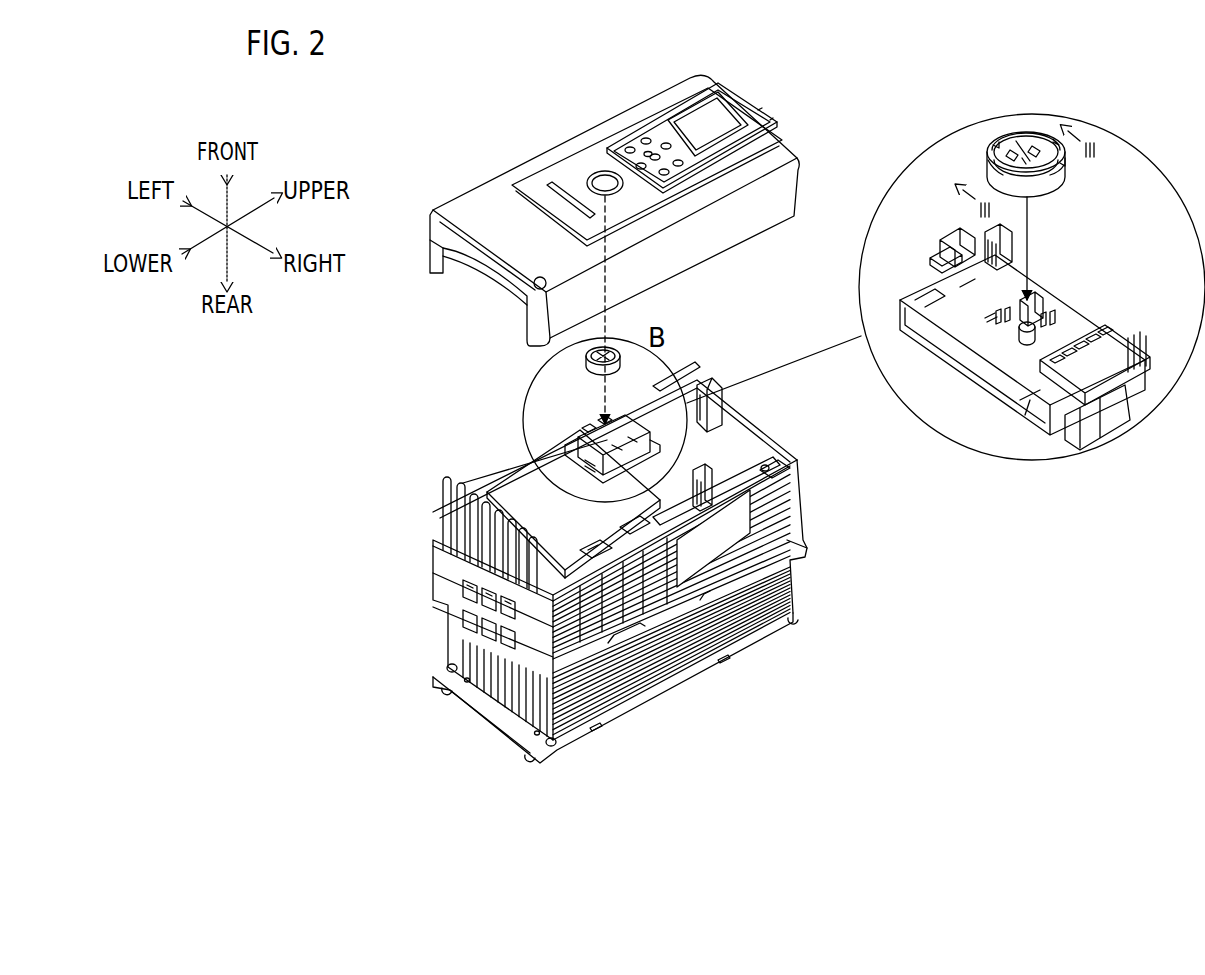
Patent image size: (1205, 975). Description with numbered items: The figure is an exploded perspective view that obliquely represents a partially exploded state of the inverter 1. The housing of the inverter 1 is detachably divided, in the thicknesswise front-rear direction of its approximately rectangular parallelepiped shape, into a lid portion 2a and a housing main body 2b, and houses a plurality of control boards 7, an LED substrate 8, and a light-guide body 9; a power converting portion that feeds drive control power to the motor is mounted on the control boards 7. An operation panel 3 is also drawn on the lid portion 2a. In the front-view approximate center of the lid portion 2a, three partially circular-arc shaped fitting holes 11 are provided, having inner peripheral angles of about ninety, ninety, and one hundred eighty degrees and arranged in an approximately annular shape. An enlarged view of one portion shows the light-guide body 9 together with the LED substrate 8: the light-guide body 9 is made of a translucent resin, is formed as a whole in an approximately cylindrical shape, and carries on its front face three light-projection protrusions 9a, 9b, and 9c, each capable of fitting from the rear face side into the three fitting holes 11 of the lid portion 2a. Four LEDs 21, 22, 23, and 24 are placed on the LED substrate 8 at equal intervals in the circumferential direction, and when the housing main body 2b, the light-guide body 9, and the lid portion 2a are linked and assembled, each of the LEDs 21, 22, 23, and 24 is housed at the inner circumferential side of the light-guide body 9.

The inverter 1 is at (437, 128).
The lid portion 2a is at (490, 193).
The housing main body 2b is at (437, 558).
The operation panel 3 is at (723, 130).
The control boards 7 is at (520, 487).
The LED substrate 8 is at (577, 425).
The light-guide body 9 is at (588, 377).
The light-projection protrusion 9a is at (1023, 133).
The light-projection protrusion 9b is at (1064, 167).
The light-projection protrusion 9c is at (988, 160).
The fitting holes 11 is at (560, 190).
The LED 21 is at (1029, 300).
The LED 22 is at (1052, 316).
The LED 23 is at (997, 318).
The LED 24 is at (1020, 336).